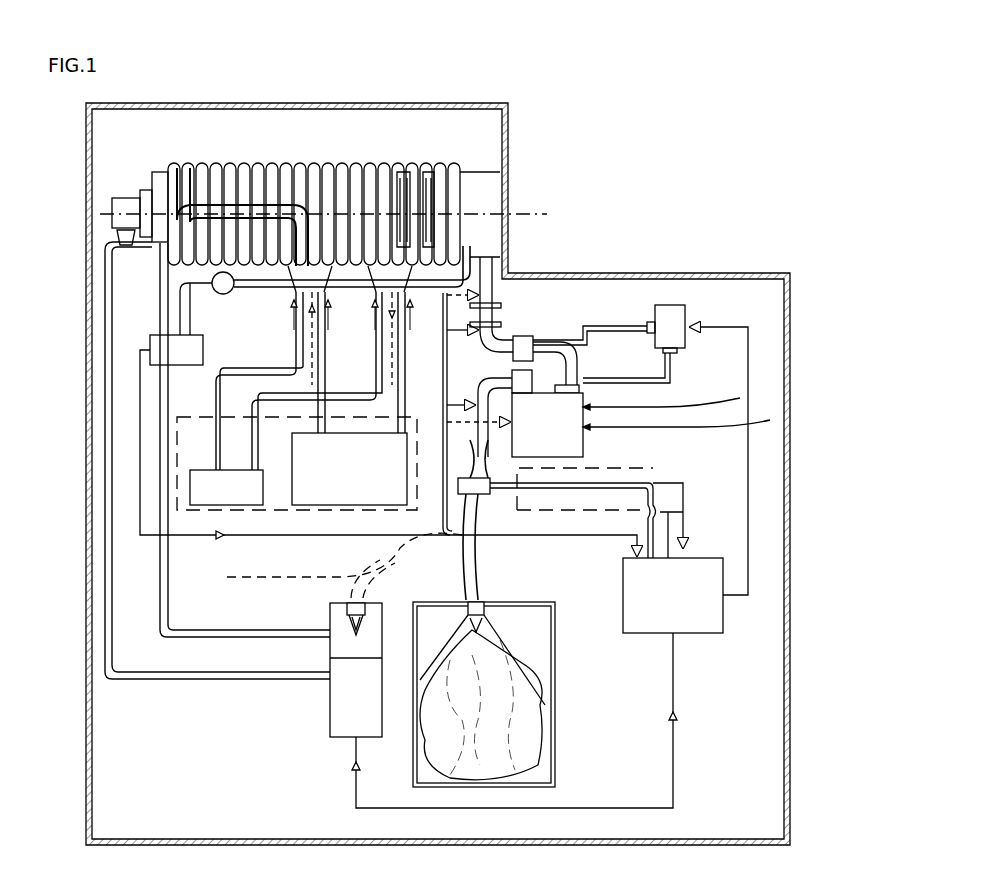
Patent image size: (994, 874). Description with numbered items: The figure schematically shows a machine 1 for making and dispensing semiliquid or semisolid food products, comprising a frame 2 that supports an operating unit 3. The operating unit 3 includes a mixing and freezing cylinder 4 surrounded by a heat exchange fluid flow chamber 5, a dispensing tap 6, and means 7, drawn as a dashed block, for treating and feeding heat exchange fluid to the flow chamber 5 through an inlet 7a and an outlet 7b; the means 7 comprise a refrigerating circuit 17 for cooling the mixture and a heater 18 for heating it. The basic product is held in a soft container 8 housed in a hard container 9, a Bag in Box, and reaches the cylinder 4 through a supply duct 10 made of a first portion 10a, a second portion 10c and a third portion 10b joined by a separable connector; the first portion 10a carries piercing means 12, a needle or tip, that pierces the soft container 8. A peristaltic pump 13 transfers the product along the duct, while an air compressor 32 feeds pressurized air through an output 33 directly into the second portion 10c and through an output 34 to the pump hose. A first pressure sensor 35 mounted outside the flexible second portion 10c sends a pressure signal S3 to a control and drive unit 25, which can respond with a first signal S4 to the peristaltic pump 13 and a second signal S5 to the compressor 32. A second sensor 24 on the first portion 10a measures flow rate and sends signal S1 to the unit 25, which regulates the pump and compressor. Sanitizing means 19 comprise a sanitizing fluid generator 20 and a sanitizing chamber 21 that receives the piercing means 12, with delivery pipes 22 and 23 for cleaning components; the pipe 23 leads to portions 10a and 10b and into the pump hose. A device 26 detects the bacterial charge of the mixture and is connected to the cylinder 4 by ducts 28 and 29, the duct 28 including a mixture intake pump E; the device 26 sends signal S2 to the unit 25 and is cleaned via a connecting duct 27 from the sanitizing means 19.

The machine 1 is at (306, 96).
The frame 2 is at (796, 743).
The operating unit 3 is at (440, 160).
The mixing and freezing cylinder 4 is at (161, 172).
The heat exchange fluid flow chamber 5 is at (279, 160).
The dispensing tap 6 is at (115, 190).
The means for treating and feeding the heat exchange fluid 7 is at (173, 442).
The inlet 7a is at (298, 296).
The outlet 7b is at (343, 300).
The flexible or soft container 8 is at (500, 712).
The hard container 9 is at (556, 776).
The supply duct 10 is at (480, 563).
The first portion of the supply duct 10a is at (574, 634).
The third portion of the supply duct 10b is at (493, 258).
The second portion of the supply duct 10c is at (545, 350).
The piercing means 12 is at (350, 630).
The peristaltic pump 13 is at (640, 402).
The refrigerating circuit 17 is at (349, 469).
The heater 18 is at (226, 487).
The sanitizing means 19 is at (328, 748).
The sanitizing fluid generator 20 is at (345, 705).
The sanitizing chamber 21 is at (345, 618).
The delivery pipe 22 is at (110, 612).
The delivery pipe 23 is at (440, 368).
The second sensor 24 is at (490, 484).
The control and drive unit 25 is at (537, 683).
The device for detecting the bacterial charge 26 is at (176, 350).
The connecting duct 27 is at (172, 638).
The duct 28 is at (262, 279).
The duct 29 is at (160, 317).
The air compressor 32 is at (670, 317).
The output of the compressor 33 is at (700, 362).
The output of the compressor 34 is at (613, 327).
The first pressure sensor 35 is at (521, 336).
The mixture intake pump E is at (182, 252).
The output signal S1 is at (683, 527).
The signal S2 is at (140, 533).
The signal S3 is at (770, 420).
The first signal S4 is at (740, 398).
The second signal S5 is at (752, 330).